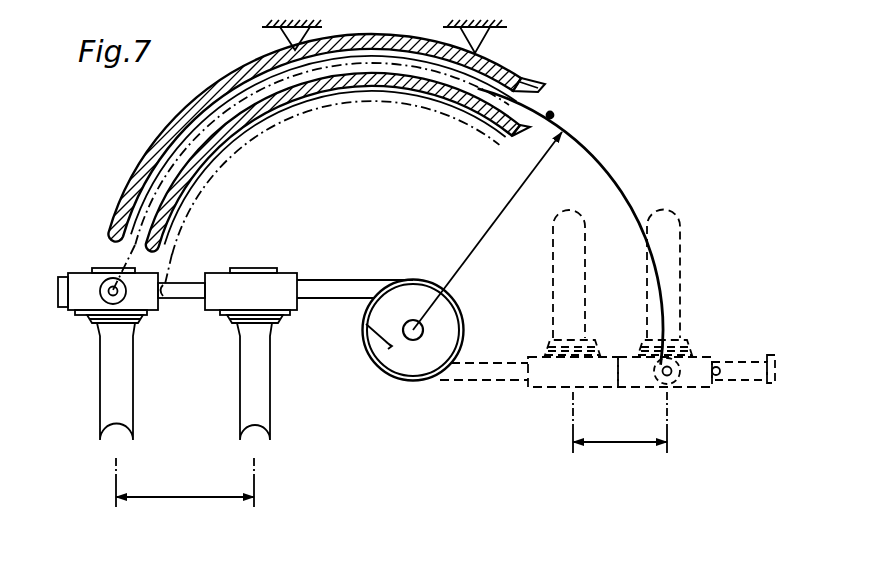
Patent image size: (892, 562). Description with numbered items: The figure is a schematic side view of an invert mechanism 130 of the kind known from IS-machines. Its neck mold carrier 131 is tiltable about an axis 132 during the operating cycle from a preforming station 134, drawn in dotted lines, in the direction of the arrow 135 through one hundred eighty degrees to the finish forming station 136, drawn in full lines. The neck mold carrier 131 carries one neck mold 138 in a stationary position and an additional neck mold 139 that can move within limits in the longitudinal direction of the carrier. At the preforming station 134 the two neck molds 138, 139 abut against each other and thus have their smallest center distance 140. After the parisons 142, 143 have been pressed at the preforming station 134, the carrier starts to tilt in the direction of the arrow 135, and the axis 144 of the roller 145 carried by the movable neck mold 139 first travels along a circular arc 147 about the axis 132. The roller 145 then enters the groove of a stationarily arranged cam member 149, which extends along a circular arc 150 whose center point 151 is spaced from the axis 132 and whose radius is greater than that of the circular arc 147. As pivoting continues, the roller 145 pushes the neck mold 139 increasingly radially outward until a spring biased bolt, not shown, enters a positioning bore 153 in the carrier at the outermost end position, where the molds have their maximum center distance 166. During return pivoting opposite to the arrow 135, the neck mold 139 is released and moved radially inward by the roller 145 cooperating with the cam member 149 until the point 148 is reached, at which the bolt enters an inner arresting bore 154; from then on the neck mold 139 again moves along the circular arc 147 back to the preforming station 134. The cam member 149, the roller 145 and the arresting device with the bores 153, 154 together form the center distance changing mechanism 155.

The invert mechanism 130 is at (362, 393).
The neck mold carrier 131 is at (63, 270).
The axis 132 is at (413, 340).
The preforming station 134 is at (692, 273).
The arrow 135 is at (463, 147).
The finish forming station 136 is at (115, 182).
The neck mold 138 is at (291, 316).
The neck mold 139 is at (78, 318).
The center distance 140 is at (617, 443).
The parison 142 is at (236, 400).
The parison 143 is at (100, 403).
The axis 144 is at (124, 296).
The roller 145 is at (144, 311).
The circular arc 147 is at (190, 200).
The point 148 is at (560, 110).
The cam member 149 is at (537, 72).
The circular arc 150 is at (181, 122).
The center point 151 is at (373, 357).
The positioning bore 153 is at (737, 357).
The inner arresting bore 154 is at (167, 281).
The center distance changing mechanism 155 is at (216, 88).
The maximum center distance 166 is at (177, 498).